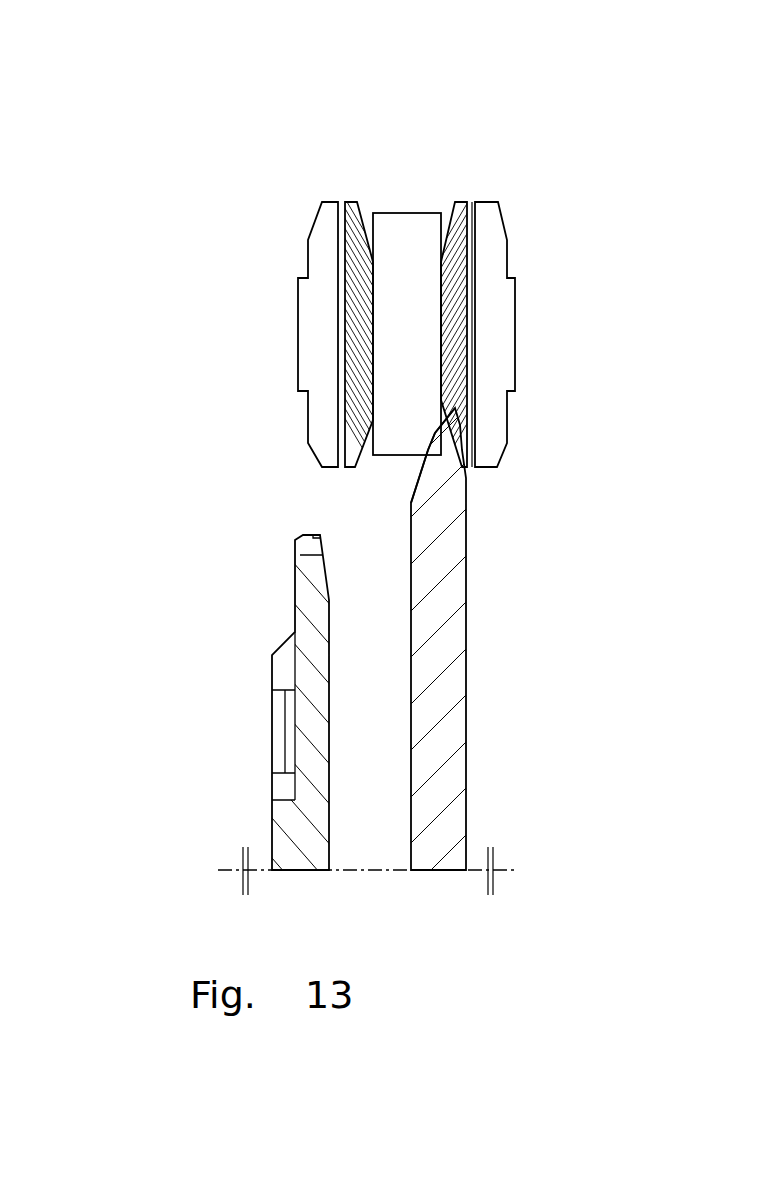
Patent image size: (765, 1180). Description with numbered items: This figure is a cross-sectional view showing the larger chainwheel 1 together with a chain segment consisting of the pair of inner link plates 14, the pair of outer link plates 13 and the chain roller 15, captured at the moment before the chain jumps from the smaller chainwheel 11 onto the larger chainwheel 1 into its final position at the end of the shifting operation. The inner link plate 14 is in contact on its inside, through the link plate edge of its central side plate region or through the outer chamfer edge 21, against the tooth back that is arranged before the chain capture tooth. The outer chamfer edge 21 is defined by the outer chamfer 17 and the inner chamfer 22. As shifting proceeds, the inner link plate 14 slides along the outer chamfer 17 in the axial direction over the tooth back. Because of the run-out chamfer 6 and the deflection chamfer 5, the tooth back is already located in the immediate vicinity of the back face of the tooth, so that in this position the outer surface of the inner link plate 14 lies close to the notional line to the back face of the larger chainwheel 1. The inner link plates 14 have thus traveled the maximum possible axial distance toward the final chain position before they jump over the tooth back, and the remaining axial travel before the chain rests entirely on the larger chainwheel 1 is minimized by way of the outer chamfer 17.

The larger chainwheel 1 is at (458, 563).
The deflection chamfer 5 is at (435, 433).
The run-out chamfer 6 is at (414, 500).
The smaller chainwheel 11 is at (302, 593).
The outer link plates 13 is at (488, 238).
The inner link plates 14 is at (441, 262).
The chain roller 15 is at (432, 218).
The outer chamfer 17 is at (435, 433).
The outer chamfer edge 21 is at (455, 408).
The inner chamfer 22 is at (441, 262).